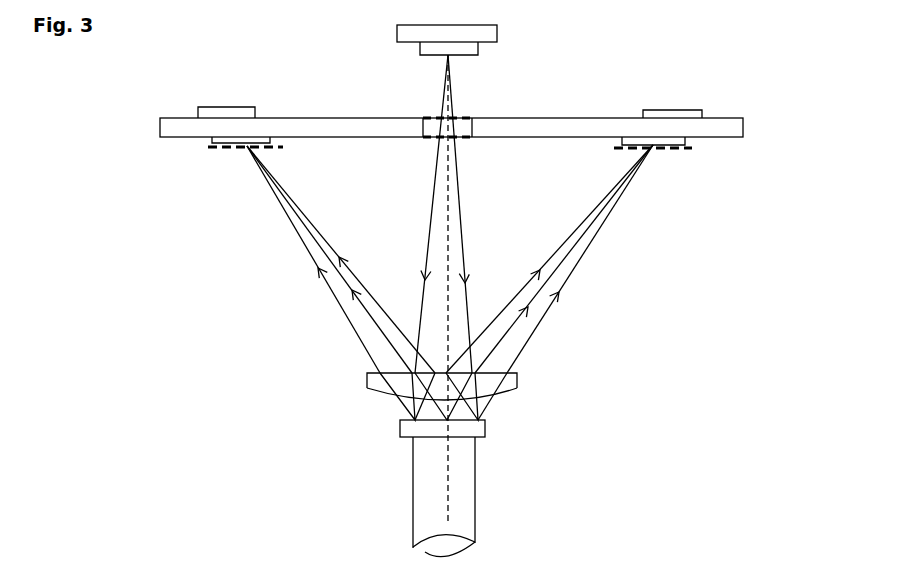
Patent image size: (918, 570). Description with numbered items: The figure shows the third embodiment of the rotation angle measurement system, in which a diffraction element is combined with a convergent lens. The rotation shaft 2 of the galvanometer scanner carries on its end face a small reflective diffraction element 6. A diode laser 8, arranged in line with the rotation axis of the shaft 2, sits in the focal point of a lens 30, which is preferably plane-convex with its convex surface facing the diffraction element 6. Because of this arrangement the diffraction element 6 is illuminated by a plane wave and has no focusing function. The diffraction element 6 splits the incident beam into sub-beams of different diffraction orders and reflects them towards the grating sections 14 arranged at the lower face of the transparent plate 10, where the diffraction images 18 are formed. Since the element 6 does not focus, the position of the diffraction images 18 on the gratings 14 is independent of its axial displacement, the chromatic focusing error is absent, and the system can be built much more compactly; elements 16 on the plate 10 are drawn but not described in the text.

The rotation shaft 2 is at (477, 486).
The reflective diffraction element 6 is at (487, 428).
The diode laser 8 is at (462, 39).
The plate 10 is at (741, 122).
The grating sections 14 is at (222, 148).
The reflective element 16 is at (234, 106).
The diffraction images 18 is at (208, 150).
The lens 30 is at (520, 382).